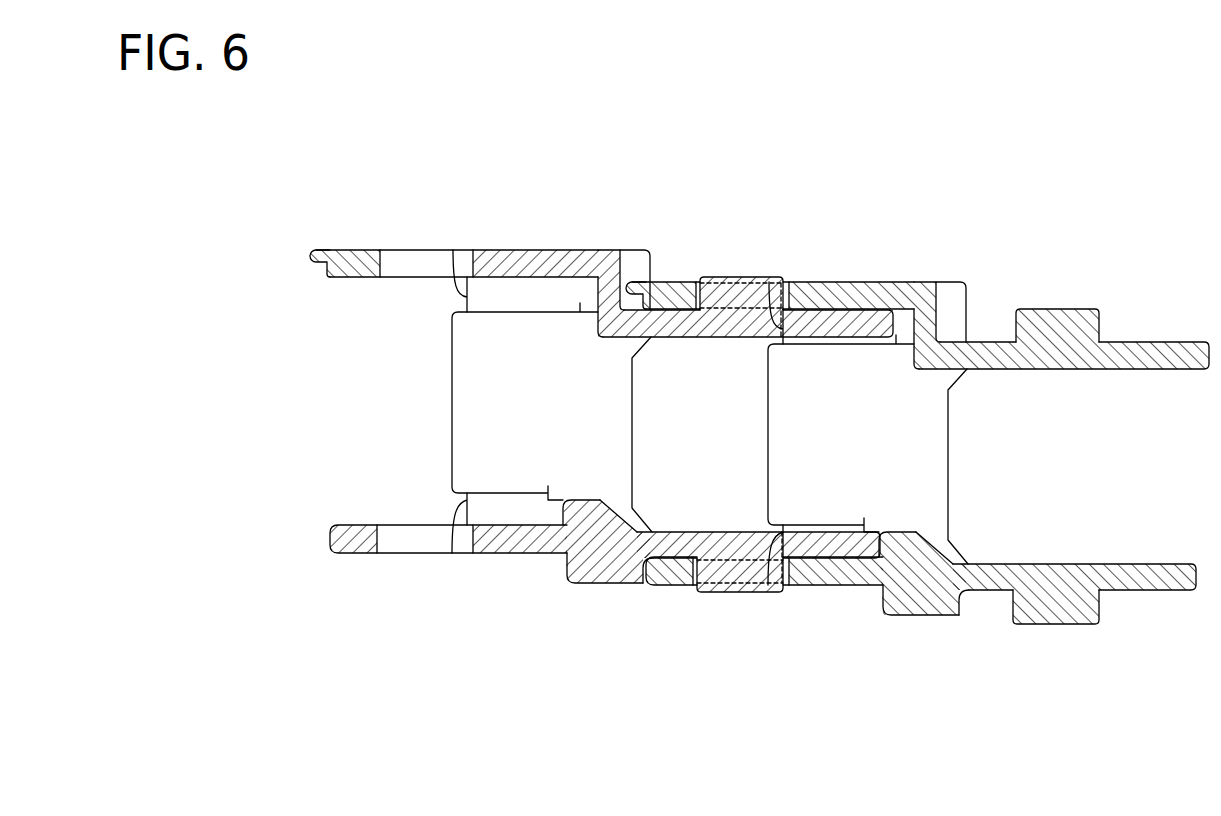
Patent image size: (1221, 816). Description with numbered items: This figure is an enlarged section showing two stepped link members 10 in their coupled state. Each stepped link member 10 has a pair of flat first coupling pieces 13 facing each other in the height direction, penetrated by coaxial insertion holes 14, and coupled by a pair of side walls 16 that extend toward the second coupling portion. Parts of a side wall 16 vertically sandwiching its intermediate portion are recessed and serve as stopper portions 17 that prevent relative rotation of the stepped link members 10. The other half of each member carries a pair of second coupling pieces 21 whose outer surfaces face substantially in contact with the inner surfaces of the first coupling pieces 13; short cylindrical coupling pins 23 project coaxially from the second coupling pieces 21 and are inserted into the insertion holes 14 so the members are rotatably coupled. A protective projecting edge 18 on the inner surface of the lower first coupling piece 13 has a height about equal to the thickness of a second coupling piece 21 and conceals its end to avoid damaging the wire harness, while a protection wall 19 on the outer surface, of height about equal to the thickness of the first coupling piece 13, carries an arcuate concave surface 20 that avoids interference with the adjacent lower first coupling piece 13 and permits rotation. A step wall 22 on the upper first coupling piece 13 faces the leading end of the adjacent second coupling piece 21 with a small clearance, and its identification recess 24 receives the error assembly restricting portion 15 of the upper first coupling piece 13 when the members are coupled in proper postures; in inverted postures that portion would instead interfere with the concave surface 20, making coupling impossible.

The stepped link member 10 is at (578, 202).
The first coupling piece 13 is at (520, 260).
The insertion hole 14 is at (415, 258).
The error assembly restricting portion 15 is at (315, 251).
The side wall 16 is at (478, 406).
The stopper portion 17 is at (453, 250).
The protective projecting edge 18 is at (580, 512).
The protection wall 19 is at (598, 578).
The concave surface 20 is at (648, 572).
The second coupling piece 21 is at (865, 320).
The step wall 22 is at (598, 288).
The coupling pin 23 is at (730, 287).
The identification recess 24 is at (632, 262).